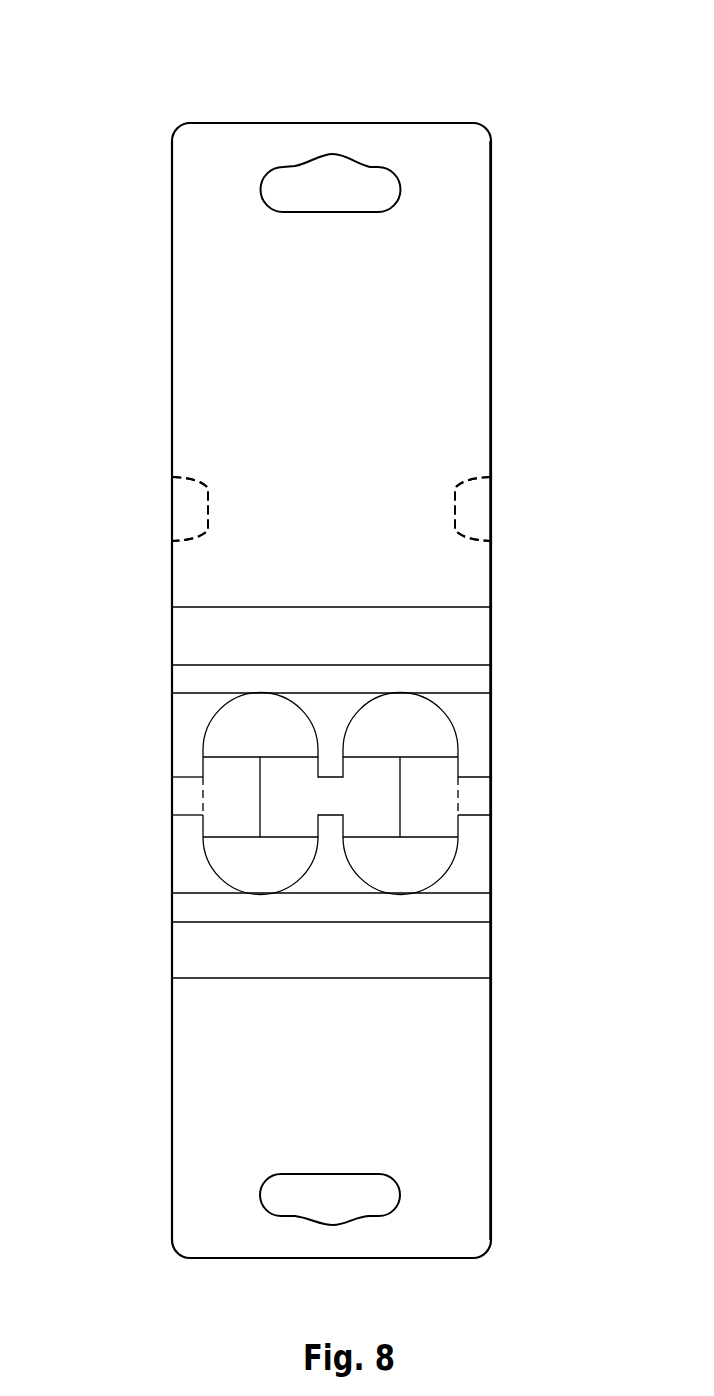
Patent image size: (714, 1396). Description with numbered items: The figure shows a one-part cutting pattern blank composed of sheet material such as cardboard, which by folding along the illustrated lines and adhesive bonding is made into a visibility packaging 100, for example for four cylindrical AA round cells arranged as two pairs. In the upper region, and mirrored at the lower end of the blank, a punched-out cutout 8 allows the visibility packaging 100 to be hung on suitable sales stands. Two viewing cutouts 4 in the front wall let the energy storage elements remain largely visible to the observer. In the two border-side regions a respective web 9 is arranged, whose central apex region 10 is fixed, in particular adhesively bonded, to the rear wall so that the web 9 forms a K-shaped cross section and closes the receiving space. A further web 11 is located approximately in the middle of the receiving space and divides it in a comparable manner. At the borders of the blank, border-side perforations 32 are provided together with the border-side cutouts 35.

The visibility packaging 100 is at (512, 112).
The cutout 8 is at (327, 180).
The border-side perforation 32 is at (202, 540).
The border-side cutout 35 is at (175, 478).
The web 11 is at (333, 742).
The web 9 is at (187, 745).
The apex region 10 is at (187, 797).
The viewing cutout 4 is at (242, 867).